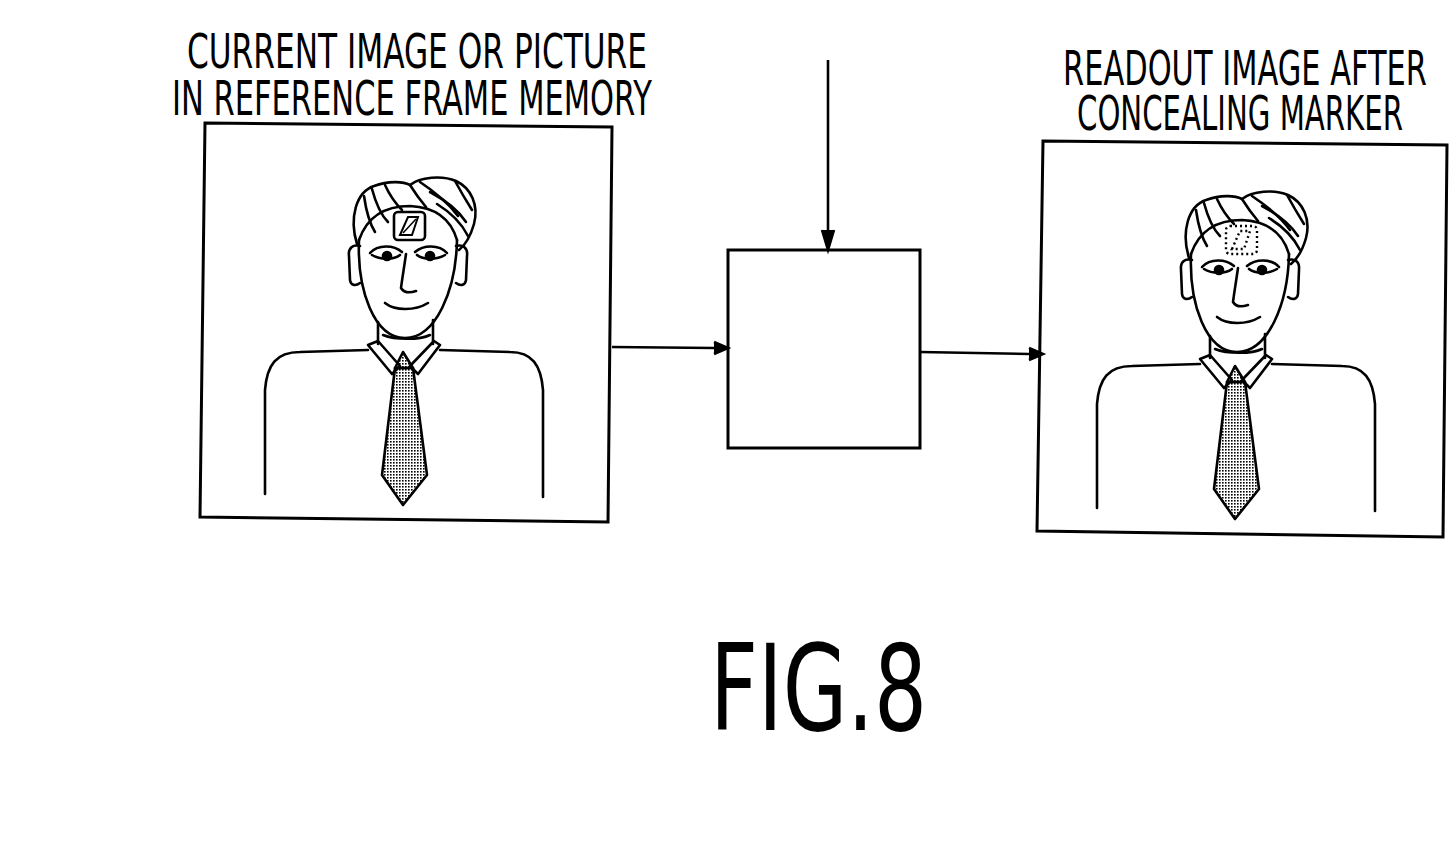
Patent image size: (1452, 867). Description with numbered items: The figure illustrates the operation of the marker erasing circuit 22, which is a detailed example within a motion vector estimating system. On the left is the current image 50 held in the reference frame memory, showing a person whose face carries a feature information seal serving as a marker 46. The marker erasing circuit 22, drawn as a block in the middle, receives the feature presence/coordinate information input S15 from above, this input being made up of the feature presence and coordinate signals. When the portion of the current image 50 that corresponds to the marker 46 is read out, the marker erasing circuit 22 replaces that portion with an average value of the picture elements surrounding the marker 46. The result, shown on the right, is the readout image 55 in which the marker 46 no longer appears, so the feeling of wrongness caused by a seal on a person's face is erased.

The marker 46 is at (394, 232).
The current image 50 is at (404, 522).
The marker erasing circuit 22 is at (826, 450).
The readout image 55 is at (1245, 537).
The feature presence/coordinate information input S15 is at (830, 92).